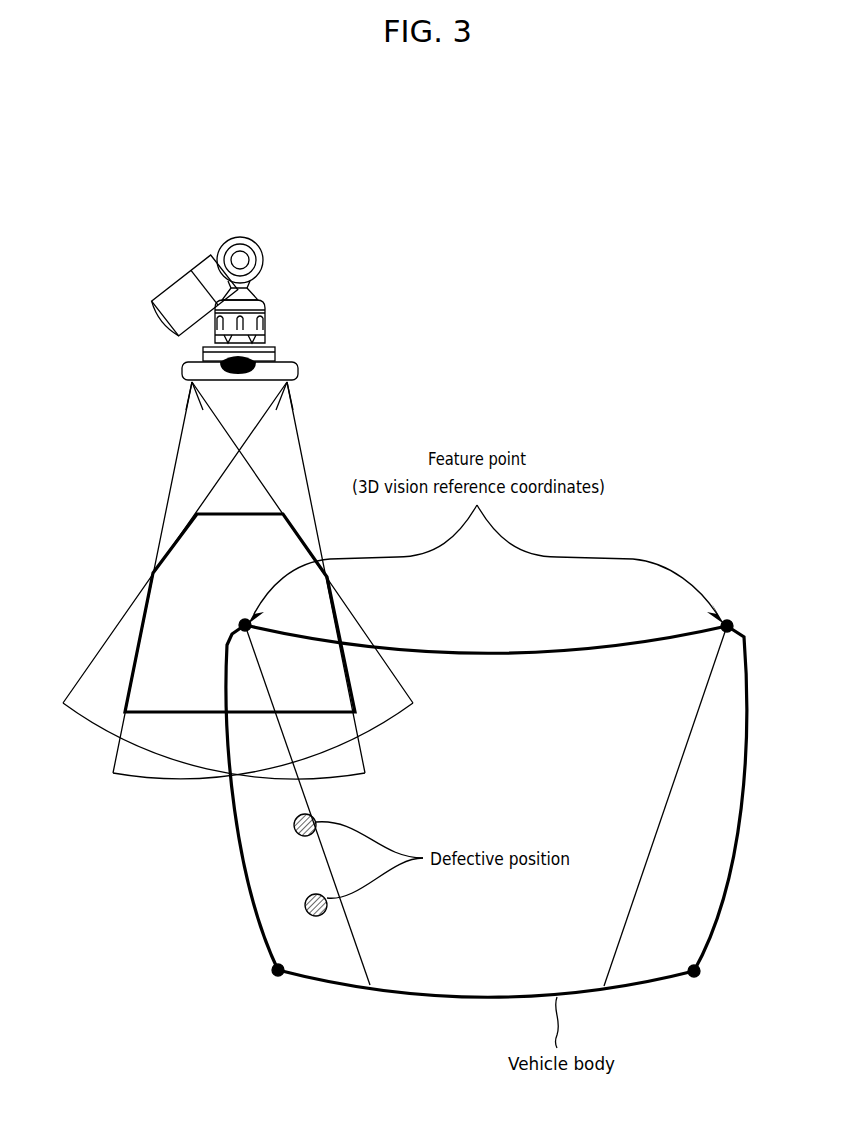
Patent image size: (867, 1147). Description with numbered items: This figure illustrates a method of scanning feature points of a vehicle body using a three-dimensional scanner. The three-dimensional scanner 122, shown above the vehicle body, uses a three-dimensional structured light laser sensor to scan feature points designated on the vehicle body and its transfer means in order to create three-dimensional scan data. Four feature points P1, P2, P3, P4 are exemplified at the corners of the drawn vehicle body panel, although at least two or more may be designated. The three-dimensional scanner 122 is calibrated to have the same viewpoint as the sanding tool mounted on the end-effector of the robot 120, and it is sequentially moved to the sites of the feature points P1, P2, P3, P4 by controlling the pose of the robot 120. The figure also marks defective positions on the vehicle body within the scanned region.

The robot 120 is at (250, 226).
The 3D scanner 122 is at (280, 362).
The feature point P1 is at (231, 621).
The feature point P2 is at (739, 621).
The feature point P3 is at (269, 985).
The feature point P4 is at (701, 985).